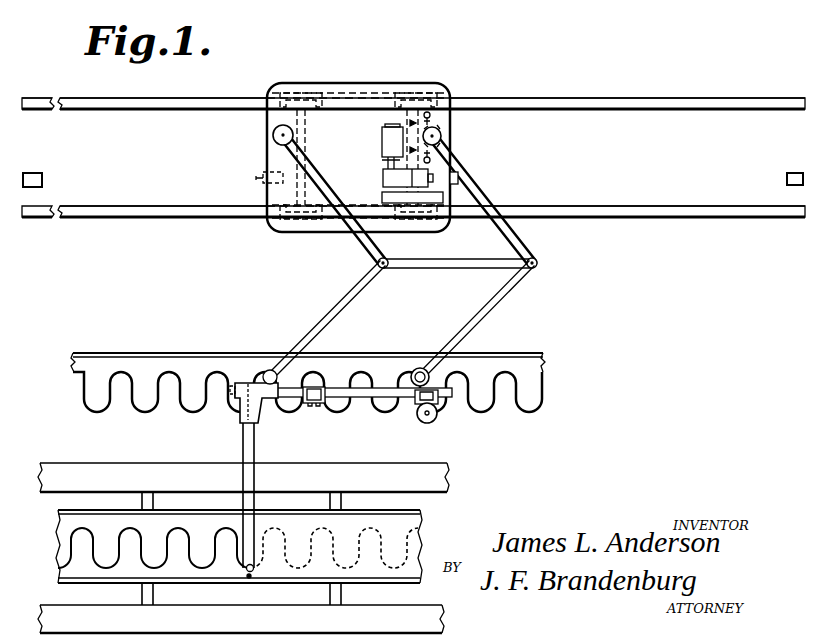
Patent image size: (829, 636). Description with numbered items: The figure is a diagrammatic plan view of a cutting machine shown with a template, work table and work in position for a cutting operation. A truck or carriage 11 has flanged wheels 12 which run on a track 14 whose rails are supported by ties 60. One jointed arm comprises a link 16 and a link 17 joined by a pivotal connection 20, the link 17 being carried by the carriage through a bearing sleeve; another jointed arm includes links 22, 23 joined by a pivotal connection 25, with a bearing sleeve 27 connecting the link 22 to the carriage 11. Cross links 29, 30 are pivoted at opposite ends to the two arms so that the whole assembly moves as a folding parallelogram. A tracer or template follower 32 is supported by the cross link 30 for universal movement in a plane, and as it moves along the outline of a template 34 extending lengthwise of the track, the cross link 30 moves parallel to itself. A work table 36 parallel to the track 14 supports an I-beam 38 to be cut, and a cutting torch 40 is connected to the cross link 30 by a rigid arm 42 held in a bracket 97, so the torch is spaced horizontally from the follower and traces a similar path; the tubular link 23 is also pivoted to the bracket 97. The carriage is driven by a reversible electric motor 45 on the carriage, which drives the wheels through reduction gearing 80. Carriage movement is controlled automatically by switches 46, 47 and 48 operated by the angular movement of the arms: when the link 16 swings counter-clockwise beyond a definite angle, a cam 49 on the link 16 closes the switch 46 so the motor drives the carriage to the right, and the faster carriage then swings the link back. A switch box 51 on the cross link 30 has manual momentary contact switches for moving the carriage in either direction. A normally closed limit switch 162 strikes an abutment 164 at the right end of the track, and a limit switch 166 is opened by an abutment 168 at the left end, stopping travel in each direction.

The carriage 11 is at (357, 55).
The flanged wheels 12 is at (296, 93).
The track 14 is at (692, 99).
The link 16 is at (484, 184).
The link 17 is at (506, 299).
The pivotal connection 20 is at (538, 266).
The link 22 is at (321, 174).
The link 23 is at (334, 311).
The pivotal connection 25 is at (377, 262).
The bearing sleeve 27 is at (272, 135).
The cross link 29 is at (416, 270).
The cross link 30 is at (335, 386).
The template follower 32 is at (437, 421).
The template 34 is at (507, 358).
The work table 36 is at (328, 462).
The I-beam 38 is at (422, 520).
The cutting torch 40 is at (253, 574).
The rigid arm 42 is at (255, 452).
The reversible electric motor 45 is at (383, 133).
The switch 46 is at (433, 118).
The switch 47 is at (440, 158).
The switch 48 is at (414, 370).
The cam 49 is at (442, 132).
The switch box 51 is at (315, 406).
The ties 60 is at (140, 503).
The reduction gearing 80 is at (384, 177).
The bracket 97 is at (245, 420).
The limit switch 162 is at (456, 188).
The abutment 164 is at (793, 172).
The limit switch 166 is at (262, 181).
The abutment 168 is at (43, 180).